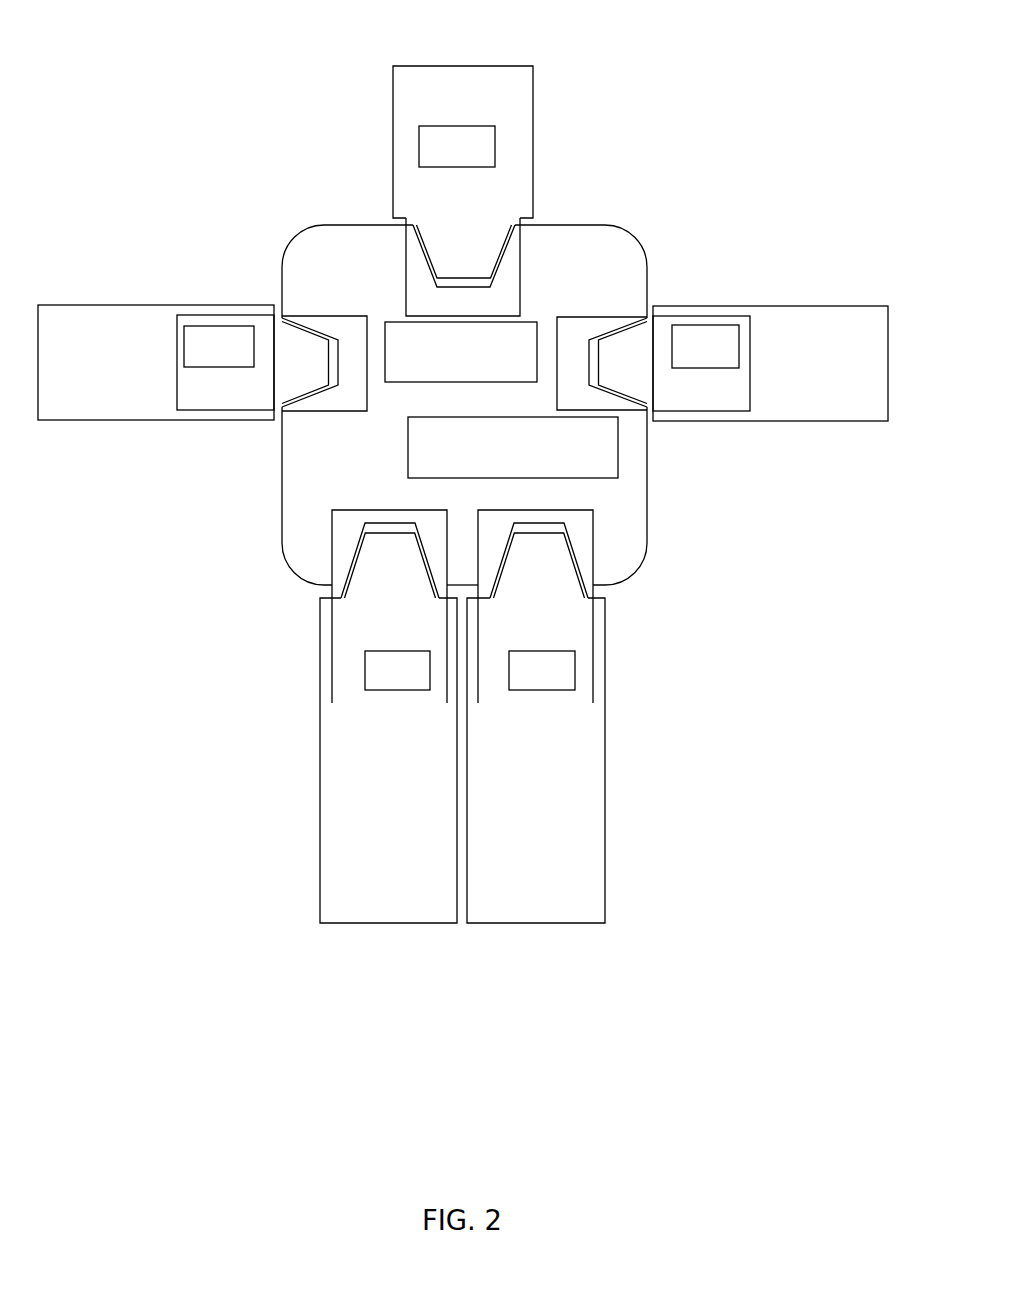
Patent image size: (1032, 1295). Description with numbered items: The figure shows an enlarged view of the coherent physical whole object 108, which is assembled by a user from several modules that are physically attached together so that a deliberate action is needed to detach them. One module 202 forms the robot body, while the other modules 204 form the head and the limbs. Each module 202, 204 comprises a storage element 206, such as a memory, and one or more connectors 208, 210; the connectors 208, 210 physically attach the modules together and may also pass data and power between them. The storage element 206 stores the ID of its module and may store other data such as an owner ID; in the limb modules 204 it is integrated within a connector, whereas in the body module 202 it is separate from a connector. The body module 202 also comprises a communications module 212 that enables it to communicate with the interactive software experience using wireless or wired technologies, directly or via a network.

The coherent physical whole object 108 is at (630, 82).
The module 202 is at (624, 228).
The module 204 is at (452, 65).
The storage element 206 is at (440, 382).
The connector 208 is at (521, 252).
The connector 210 is at (177, 384).
The communications module 212 is at (500, 478).